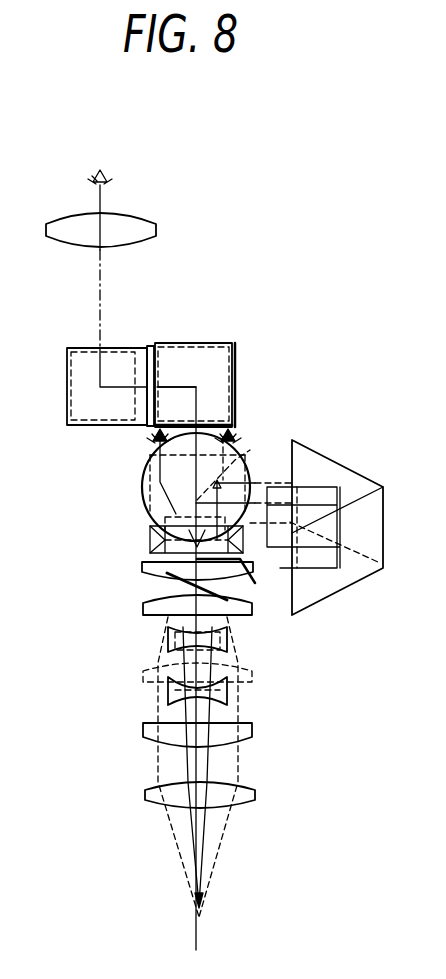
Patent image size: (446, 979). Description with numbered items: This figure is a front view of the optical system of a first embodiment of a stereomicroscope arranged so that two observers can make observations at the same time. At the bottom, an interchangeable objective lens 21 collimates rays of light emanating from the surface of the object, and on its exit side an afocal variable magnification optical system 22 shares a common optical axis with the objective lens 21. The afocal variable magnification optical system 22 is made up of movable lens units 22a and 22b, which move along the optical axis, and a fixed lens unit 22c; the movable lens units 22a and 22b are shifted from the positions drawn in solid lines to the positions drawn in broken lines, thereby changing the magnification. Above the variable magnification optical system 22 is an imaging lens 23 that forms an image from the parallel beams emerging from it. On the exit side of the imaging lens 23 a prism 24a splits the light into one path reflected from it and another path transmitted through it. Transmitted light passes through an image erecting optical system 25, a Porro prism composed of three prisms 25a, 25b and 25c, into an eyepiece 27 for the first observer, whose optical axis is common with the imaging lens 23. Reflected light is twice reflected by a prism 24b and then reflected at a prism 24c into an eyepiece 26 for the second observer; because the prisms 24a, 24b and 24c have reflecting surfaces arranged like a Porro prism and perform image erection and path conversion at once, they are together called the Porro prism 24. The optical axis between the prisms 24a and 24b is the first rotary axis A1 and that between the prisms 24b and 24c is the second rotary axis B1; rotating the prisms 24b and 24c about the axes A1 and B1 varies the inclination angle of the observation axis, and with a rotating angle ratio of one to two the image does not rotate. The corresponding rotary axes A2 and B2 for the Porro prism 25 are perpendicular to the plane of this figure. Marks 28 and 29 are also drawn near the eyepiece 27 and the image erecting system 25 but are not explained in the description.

The objective lens 21 is at (145, 795).
The afocal variable magnification optical system 22 is at (198, 691).
The movable lens unit 22a is at (250, 678).
The movable lens unit 22b is at (227, 648).
The fixed lens unit 22c is at (143, 605).
The imaging lens 23 is at (143, 570).
The Porro prism 24 is at (330, 521).
The prism 24a is at (150, 535).
The prism 24b is at (358, 568).
The prism 24c is at (250, 592).
The image erecting optical system 25 is at (170, 361).
The prism 25a is at (230, 342).
The prism 25b is at (145, 353).
The prism 25c is at (75, 362).
The eyepiece 26 is at (141, 487).
The eyepiece 27 is at (145, 230).
The reference marks 28 is at (150, 437).
The eye point 29 is at (104, 174).
The first rotary axis A1 is at (267, 497).
The rotary axis A2 is at (200, 382).
The second rotary axis B1 is at (317, 562).
The rotary axis B2 is at (96, 388).